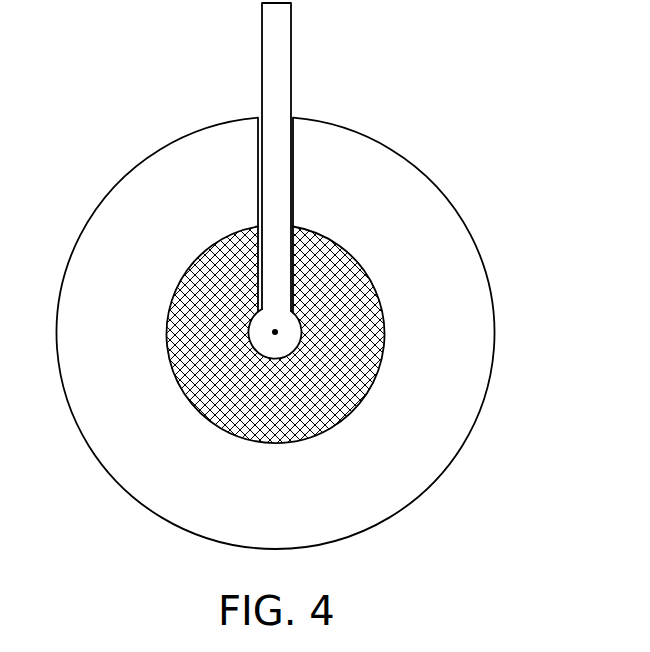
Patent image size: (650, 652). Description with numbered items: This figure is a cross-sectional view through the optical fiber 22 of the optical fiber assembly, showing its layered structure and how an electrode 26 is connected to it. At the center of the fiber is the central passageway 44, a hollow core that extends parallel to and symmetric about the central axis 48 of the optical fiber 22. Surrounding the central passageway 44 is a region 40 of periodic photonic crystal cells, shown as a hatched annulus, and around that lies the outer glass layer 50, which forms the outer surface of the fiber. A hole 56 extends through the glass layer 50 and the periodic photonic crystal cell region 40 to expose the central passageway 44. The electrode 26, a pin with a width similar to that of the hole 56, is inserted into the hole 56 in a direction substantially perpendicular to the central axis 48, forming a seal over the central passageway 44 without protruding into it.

The optical fiber 22 is at (274, 276).
The electrode 26 is at (291, 47).
The region of periodic photonic crystal cells 40 is at (376, 312).
The central passageway 44 is at (278, 350).
The central axis 48 is at (275, 332).
The outer glass layer 50 is at (448, 207).
The hole 56 is at (258, 160).